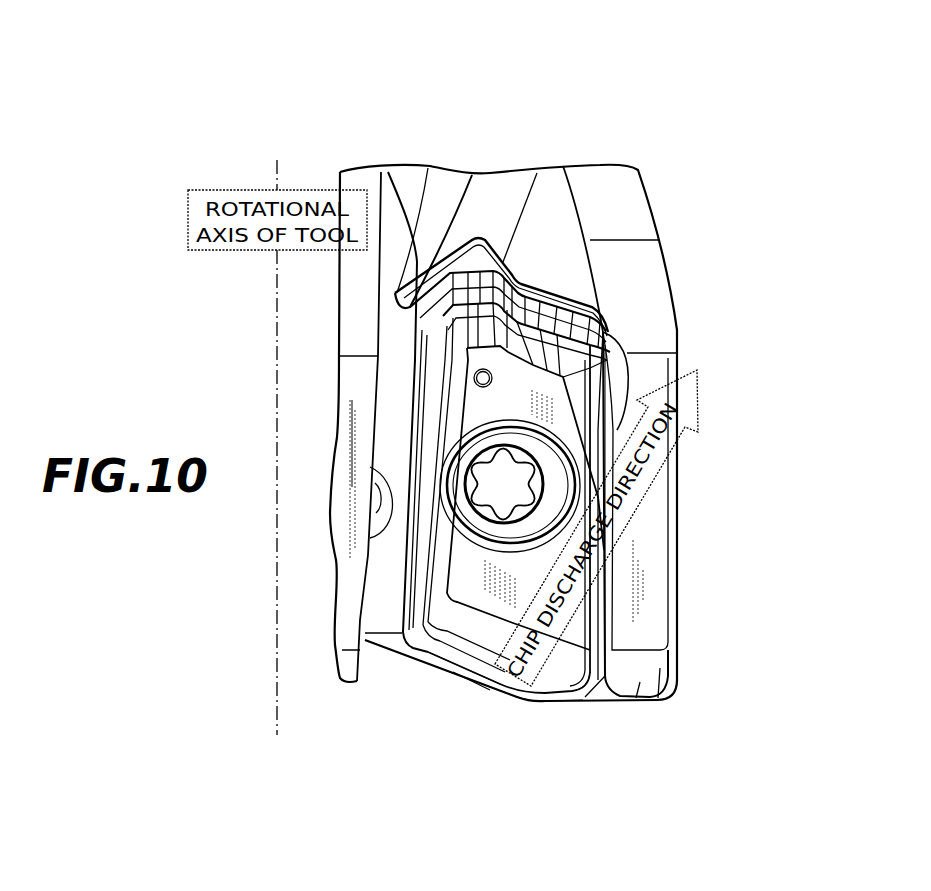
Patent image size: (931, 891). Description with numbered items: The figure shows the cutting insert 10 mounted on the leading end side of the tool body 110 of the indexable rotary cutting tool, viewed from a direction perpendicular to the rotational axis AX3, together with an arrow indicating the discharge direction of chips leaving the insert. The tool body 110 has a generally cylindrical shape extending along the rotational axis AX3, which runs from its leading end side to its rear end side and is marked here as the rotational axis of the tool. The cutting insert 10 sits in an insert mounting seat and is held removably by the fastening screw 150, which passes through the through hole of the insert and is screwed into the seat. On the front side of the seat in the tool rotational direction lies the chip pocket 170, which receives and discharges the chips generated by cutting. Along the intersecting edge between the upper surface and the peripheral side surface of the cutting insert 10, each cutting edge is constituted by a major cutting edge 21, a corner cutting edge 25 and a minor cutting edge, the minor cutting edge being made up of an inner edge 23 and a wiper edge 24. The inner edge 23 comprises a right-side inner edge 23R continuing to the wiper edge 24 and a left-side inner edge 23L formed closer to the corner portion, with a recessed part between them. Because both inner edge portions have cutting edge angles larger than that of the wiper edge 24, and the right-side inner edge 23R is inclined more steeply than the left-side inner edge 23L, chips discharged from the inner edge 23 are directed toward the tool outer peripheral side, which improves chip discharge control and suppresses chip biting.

The rotational axis AX3 is at (275, 167).
The tool body 110 is at (364, 180).
The chip pocket 170 is at (498, 188).
The cutting insert 10 is at (606, 332).
The fastening screw 150 is at (502, 487).
The major cutting edge 21 is at (614, 602).
The inner edge 23 is at (452, 694).
The left-side inner edge 23L is at (431, 666).
The right-side inner edge 23R is at (500, 694).
The wiper edge 24 is at (556, 712).
The corner cutting edge 25 is at (591, 704).